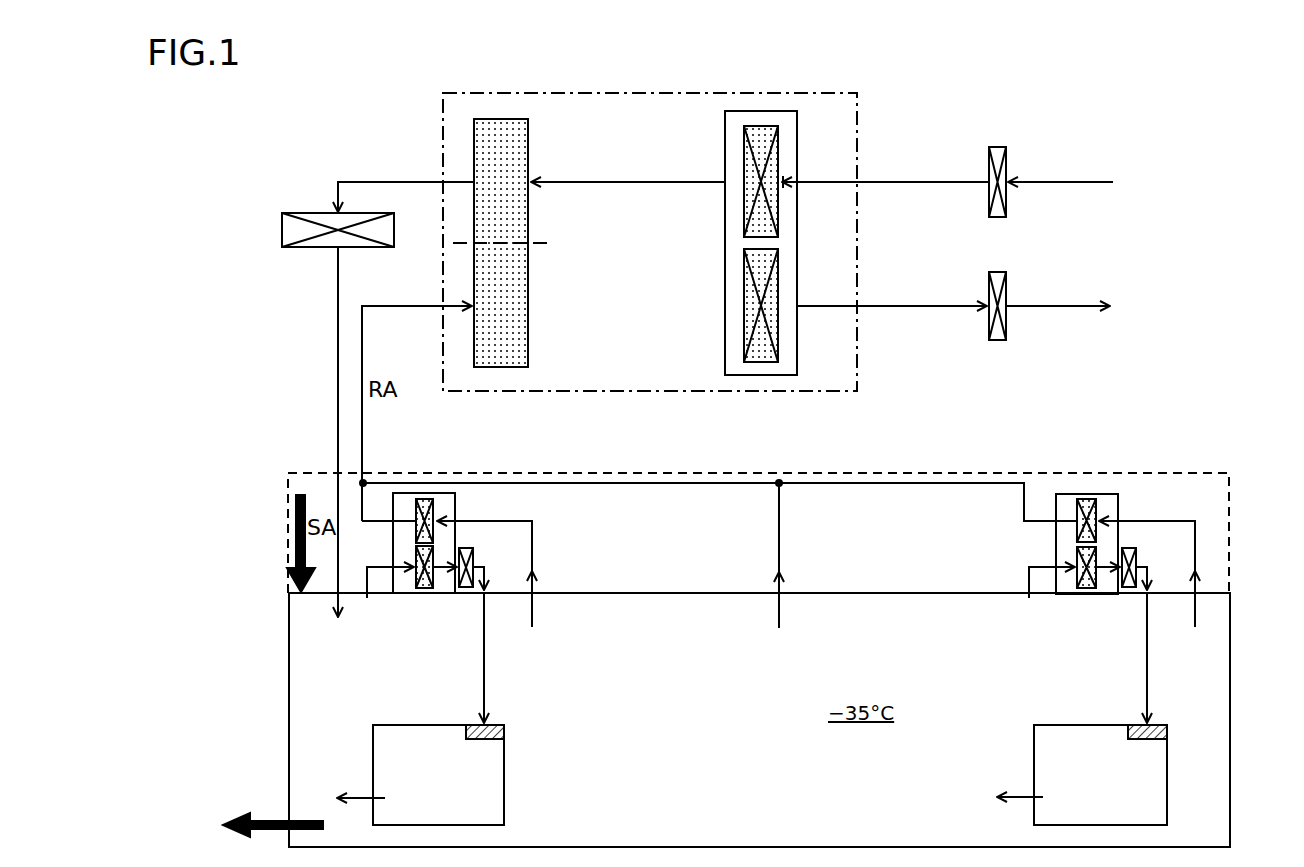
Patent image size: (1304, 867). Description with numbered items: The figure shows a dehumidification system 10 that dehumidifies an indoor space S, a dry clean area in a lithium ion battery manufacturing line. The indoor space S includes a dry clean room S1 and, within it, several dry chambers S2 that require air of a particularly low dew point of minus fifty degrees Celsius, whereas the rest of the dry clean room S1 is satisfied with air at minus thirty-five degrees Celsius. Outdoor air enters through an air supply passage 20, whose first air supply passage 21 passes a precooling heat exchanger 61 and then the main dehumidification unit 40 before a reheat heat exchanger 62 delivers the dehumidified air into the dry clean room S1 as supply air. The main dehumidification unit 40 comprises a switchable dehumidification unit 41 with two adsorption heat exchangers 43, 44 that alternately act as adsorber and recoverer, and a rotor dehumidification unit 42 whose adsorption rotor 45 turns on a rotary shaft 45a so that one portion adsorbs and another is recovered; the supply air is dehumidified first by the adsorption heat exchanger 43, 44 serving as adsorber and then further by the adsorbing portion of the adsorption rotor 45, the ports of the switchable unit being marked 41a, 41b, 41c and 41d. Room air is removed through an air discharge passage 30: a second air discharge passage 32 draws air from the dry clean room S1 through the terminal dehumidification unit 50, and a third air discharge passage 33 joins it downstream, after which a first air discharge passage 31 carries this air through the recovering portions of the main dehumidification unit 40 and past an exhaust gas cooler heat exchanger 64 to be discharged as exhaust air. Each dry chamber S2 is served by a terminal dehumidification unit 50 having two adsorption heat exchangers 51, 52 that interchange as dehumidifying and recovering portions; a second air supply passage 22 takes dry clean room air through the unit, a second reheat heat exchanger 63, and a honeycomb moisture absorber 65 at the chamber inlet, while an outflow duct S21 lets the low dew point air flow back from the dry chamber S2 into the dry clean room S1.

The dehumidification system 10 is at (1185, 105).
The air supply passage 20 is at (925, 181).
The first air supply passage 21 is at (890, 184).
The second air supply passage 22 is at (367, 580).
The air discharge passage 30 is at (925, 308).
The first air discharge passage 31 is at (890, 304).
The second air discharge passage 32 is at (532, 520).
The third air discharge passage 33 is at (781, 524).
The main dehumidification unit 40 is at (815, 93).
The switchable dehumidification unit 41 is at (752, 219).
The first inlet 41a is at (786, 182).
The second inlet 41b is at (725, 306).
The first outlet 41c is at (725, 182).
The second outlet 41d is at (799, 308).
The rotor dehumidification unit 42 is at (535, 210).
The adsorption heat exchanger 43 is at (746, 142).
The adsorption heat exchanger 44 is at (746, 350).
The adsorption rotor 45 is at (530, 272).
The rotary shaft 45a is at (540, 242).
The terminal dehumidification unit 50 is at (440, 492).
The adsorption heat exchanger 51 is at (420, 578).
The adsorption heat exchanger 52 is at (420, 510).
The precooling heat exchanger 61 is at (1008, 162).
The reheat heat exchanger 62 is at (310, 212).
The second reheat heat exchanger 63 is at (474, 562).
The exhaust gas cooler heat exchanger 64 is at (1008, 322).
The moisture absorber 65 is at (494, 742).
The indoor space S is at (1190, 673).
The dry clean room S1 is at (1229, 631).
The dry chamber S2 is at (505, 800).
The outflow duct S21 is at (372, 797).